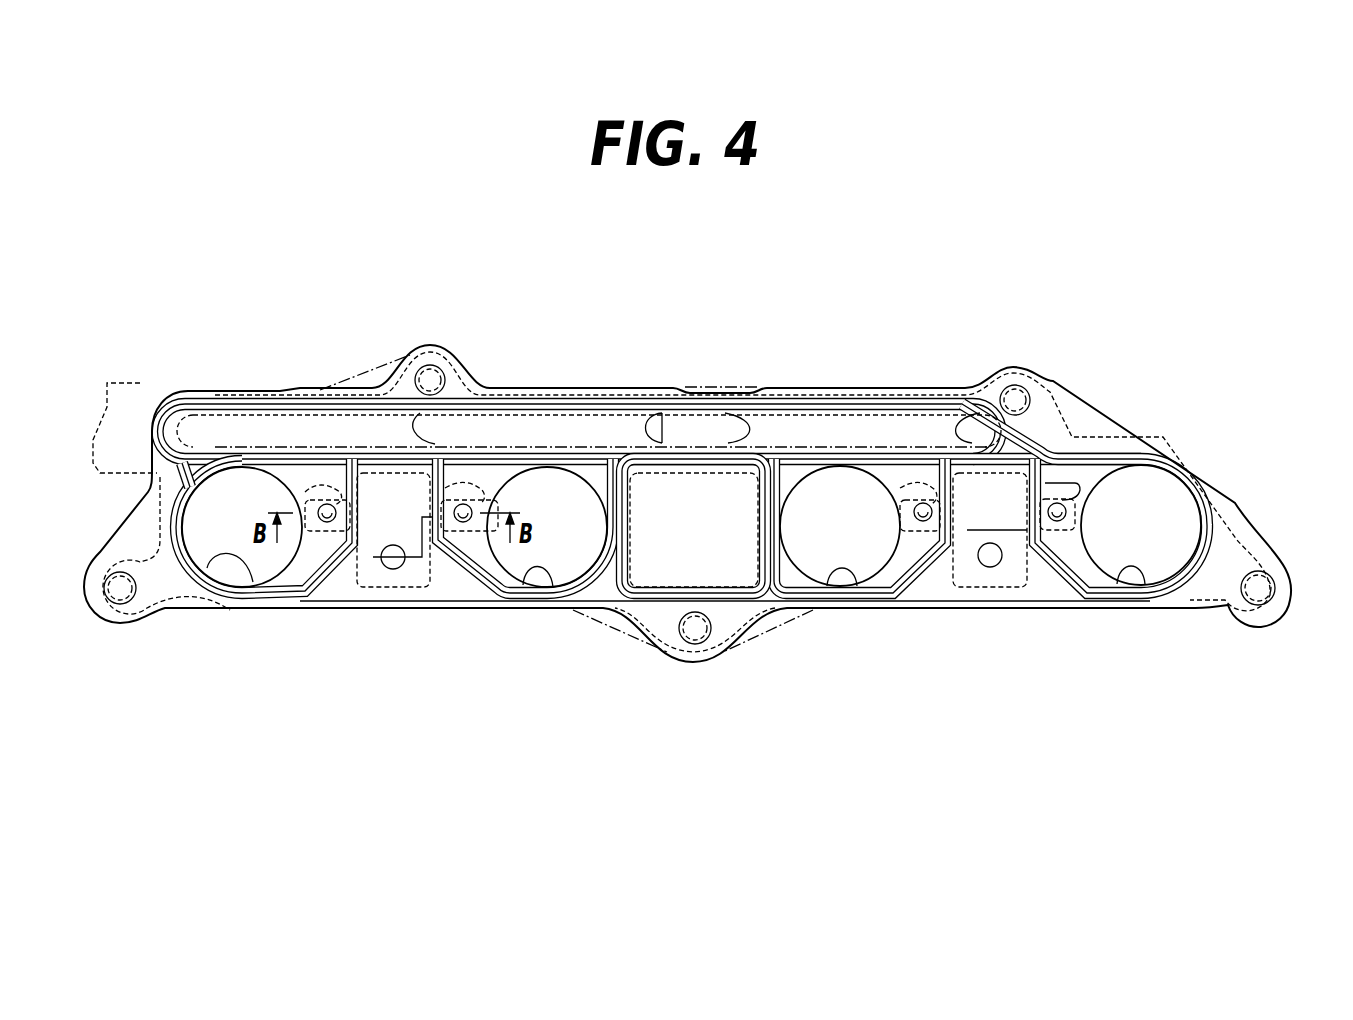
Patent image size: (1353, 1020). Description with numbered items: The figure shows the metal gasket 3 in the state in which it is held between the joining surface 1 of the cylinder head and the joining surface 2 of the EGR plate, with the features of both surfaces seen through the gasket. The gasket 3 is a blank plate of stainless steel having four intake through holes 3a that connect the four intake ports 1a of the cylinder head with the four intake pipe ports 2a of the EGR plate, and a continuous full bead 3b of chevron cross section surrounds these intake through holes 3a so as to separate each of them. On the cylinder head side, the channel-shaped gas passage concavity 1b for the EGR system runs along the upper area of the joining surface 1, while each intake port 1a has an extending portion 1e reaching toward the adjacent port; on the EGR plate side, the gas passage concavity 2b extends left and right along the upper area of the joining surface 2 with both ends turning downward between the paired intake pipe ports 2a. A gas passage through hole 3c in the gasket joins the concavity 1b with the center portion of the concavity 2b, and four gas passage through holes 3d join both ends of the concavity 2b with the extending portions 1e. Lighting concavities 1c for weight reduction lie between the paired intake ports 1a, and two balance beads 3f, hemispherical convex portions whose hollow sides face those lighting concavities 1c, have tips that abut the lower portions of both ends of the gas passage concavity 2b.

The joining surface 1 is at (1240, 550).
The intake port 1a is at (661, 594).
The gas passage concavity 1b is at (352, 520).
The lighting concavity 1c is at (358, 578).
The extending portion 1e is at (280, 503).
The joining surface 2 is at (725, 385).
The intake pipe port 2a is at (691, 526).
The gas passage concavity 2b is at (322, 505).
The metal gasket 3 is at (1240, 503).
The intake through hole 3a is at (207, 563).
The full bead 3b is at (1193, 463).
The gas passage through hole 3c is at (662, 448).
The gas passage through hole 3d is at (327, 524).
The balance bead 3f is at (394, 570).